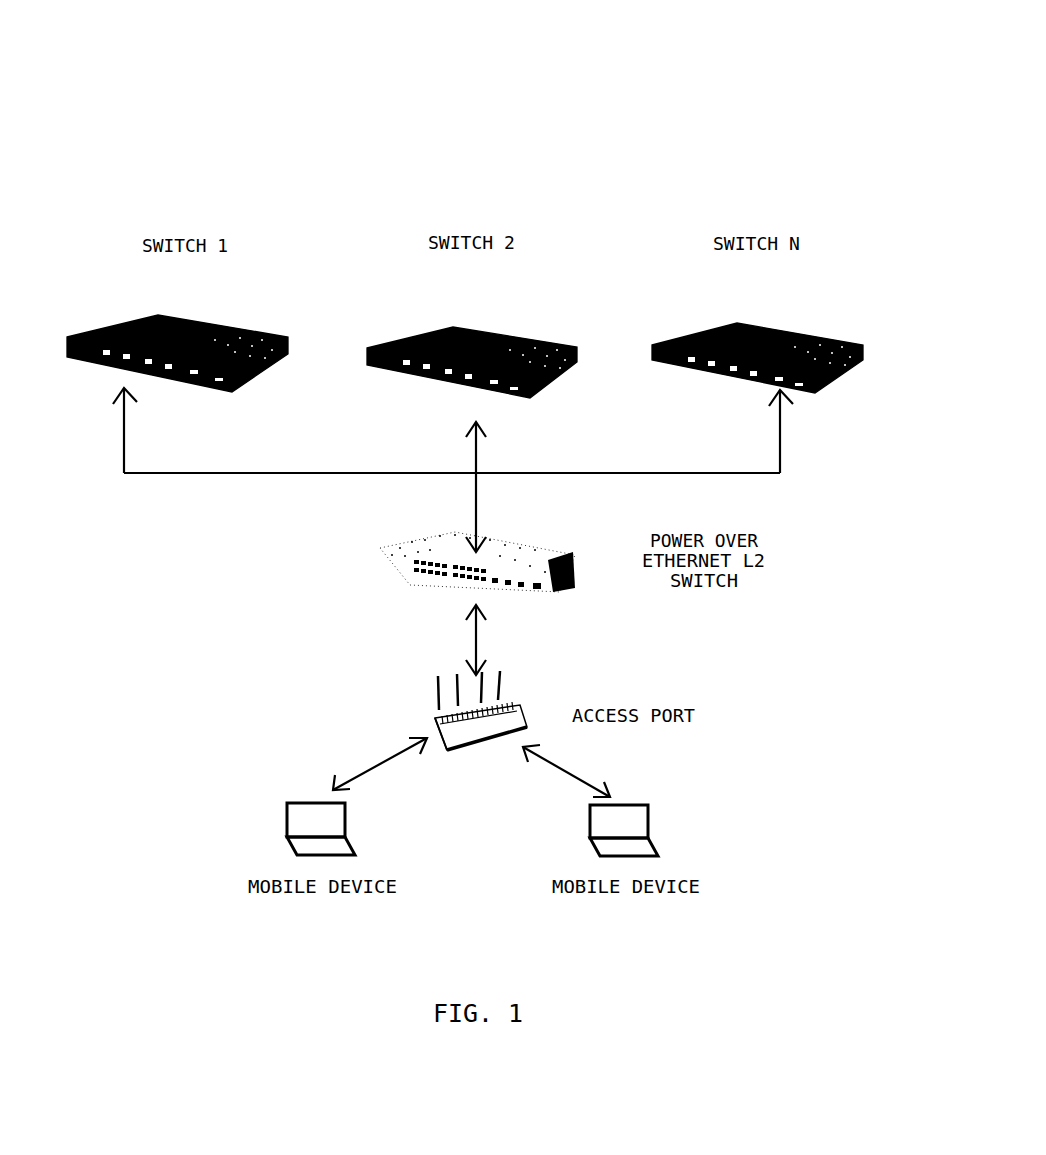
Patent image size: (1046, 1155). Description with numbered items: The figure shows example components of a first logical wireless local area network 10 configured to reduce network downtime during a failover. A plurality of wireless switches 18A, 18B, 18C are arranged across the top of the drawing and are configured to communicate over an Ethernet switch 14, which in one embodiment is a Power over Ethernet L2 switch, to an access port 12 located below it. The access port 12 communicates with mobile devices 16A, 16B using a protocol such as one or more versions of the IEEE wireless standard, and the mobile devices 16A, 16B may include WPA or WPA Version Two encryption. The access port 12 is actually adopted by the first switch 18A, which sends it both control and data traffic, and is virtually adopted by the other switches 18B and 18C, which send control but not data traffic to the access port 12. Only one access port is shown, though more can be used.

The logical wireless local area network 10 is at (623, 123).
The access port 12 is at (533, 693).
The Ethernet switch 14 is at (360, 564).
The mobile device 16A is at (262, 830).
The mobile device 16B is at (655, 817).
The wireless switch 18A is at (125, 320).
The wireless switch 18B is at (498, 332).
The wireless switch 18C is at (792, 328).